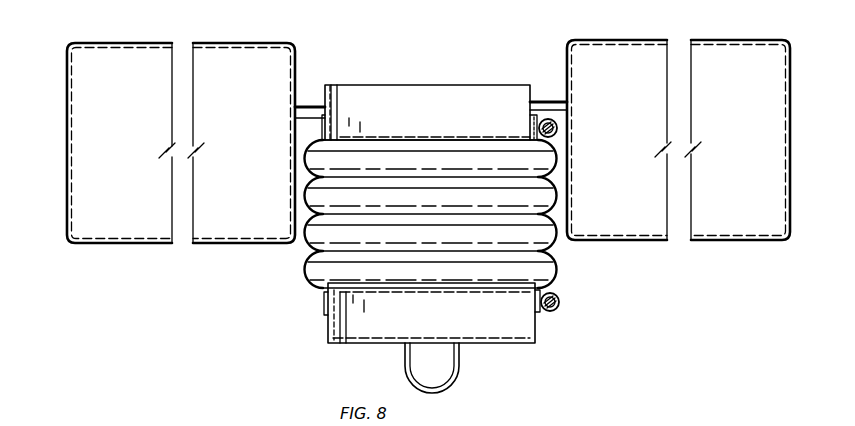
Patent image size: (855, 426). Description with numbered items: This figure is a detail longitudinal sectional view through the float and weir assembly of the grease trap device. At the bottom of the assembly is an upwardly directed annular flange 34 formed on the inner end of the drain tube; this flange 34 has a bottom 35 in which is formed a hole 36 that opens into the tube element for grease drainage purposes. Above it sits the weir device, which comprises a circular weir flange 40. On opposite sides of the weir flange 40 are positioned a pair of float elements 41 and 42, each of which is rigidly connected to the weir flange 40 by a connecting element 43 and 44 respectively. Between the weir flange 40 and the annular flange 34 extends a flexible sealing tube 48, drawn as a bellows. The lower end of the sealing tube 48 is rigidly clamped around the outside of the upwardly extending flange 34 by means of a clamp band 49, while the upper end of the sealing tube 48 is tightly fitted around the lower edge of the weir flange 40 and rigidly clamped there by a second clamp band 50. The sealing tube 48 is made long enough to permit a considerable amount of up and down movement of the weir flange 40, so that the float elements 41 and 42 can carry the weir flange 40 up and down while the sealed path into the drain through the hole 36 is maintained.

The annular flange 34 is at (456, 328).
The bottom 35 is at (493, 343).
The hole 36 is at (437, 343).
The weir flange 40 is at (340, 85).
The float element 41 is at (638, 40).
The float element 42 is at (158, 43).
The connecting element 43 is at (304, 106).
The connecting element 44 is at (554, 101).
The flexible sealing tube 48 is at (558, 272).
The clamp band 49 is at (559, 303).
The clamp band 50 is at (558, 128).